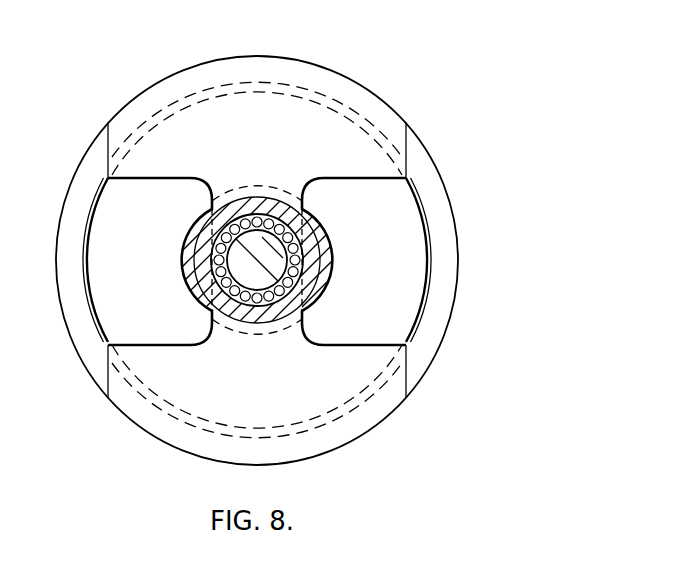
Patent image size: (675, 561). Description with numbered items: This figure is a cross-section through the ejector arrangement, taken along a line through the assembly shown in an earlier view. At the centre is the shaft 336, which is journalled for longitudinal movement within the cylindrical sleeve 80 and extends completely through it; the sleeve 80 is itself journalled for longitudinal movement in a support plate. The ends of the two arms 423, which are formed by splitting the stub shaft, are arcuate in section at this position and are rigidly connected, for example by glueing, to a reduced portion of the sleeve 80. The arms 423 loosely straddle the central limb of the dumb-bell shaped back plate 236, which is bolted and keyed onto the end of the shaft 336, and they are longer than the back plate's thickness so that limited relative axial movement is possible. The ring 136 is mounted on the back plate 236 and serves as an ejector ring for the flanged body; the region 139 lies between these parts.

The cylindrical sleeve 80 is at (260, 203).
The ring 136 is at (436, 207).
The winding space 139 is at (401, 266).
The back plate 236 is at (362, 376).
The shaft 336 is at (258, 282).
The arms 423 is at (186, 259).